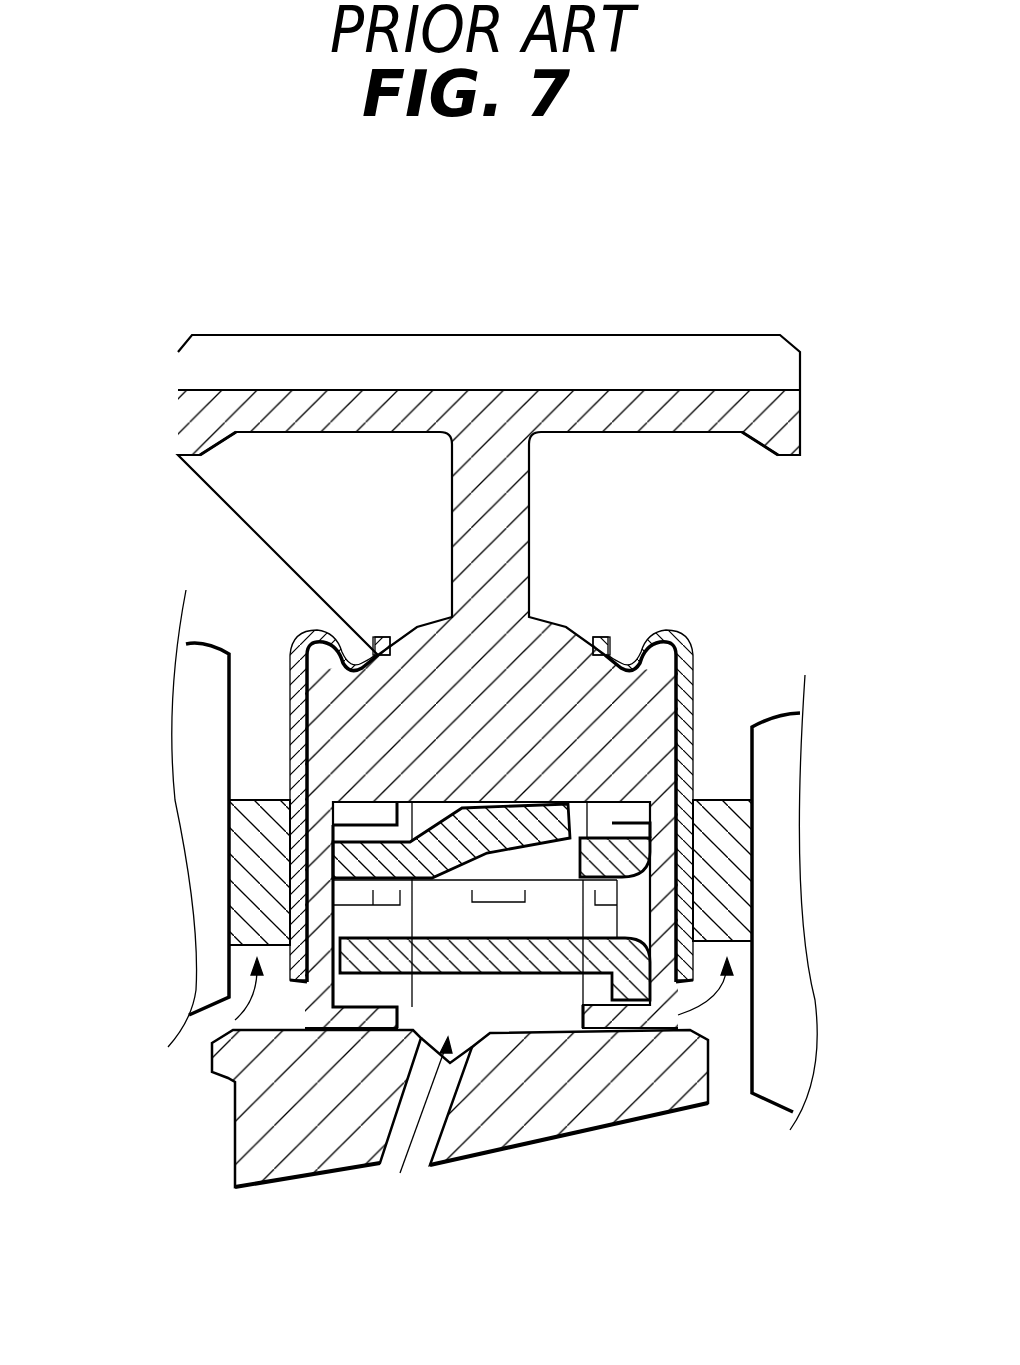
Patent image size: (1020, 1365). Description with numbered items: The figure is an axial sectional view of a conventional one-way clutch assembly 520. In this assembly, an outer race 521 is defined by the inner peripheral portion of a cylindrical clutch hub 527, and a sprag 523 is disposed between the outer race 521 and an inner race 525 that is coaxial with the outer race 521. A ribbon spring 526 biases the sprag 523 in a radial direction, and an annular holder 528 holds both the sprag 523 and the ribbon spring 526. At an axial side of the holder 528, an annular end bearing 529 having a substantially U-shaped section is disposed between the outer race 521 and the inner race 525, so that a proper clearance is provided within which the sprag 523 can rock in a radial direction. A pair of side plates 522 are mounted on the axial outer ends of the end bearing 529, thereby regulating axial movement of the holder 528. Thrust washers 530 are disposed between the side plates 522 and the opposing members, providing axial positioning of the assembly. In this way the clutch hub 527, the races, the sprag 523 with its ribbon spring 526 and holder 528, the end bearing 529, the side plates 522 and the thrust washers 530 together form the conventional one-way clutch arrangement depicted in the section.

The one-way clutch assembly 520 is at (480, 685).
The outer race 521 is at (587, 638).
The side plates 522 is at (372, 640).
The sprag 523 is at (521, 1008).
The inner race 525 is at (665, 1085).
The ribbon spring 526 is at (372, 912).
The clutch hub 527 is at (233, 345).
The holder 528 is at (700, 830).
The end bearing 529 is at (318, 1015).
The thrust washers 530 is at (235, 855).